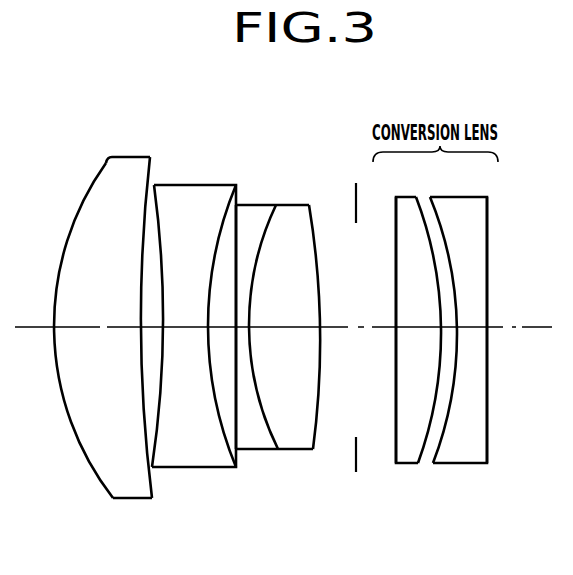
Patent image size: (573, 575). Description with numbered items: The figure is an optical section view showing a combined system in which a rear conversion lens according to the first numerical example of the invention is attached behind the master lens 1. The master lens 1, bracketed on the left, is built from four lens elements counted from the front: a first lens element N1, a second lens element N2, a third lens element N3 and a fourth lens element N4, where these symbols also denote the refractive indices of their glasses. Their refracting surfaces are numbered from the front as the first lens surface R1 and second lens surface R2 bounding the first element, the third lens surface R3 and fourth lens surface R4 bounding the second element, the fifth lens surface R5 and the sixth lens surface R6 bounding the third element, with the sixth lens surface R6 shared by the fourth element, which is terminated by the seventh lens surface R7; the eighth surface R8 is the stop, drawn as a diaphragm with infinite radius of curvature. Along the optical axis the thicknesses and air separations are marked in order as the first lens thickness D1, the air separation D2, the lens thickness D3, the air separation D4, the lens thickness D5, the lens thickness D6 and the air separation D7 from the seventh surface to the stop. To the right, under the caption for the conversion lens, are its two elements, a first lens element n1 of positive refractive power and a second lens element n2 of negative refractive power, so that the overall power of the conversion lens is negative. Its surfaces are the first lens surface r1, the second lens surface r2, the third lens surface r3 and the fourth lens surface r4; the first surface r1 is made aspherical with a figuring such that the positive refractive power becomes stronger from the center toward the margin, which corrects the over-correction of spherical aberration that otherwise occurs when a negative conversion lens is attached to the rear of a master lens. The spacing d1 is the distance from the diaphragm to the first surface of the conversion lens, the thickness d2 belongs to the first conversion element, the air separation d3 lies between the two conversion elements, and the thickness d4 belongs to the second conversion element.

The master lens 1 is at (326, 143).
The first lens element of the master lens N1 is at (103, 357).
The second lens element of the master lens N2 is at (194, 371).
The third lens element of the master lens N3 is at (274, 381).
The fourth lens element of the master lens N4 is at (299, 381).
The first lens surface R1 is at (105, 490).
The second lens surface R2 is at (148, 462).
The third lens surface R3 is at (157, 447).
The fourth lens surface R4 is at (235, 433).
The fifth lens surface R5 is at (247, 440).
The sixth lens surface R6 is at (273, 433).
The seventh lens surface R7 is at (313, 437).
The stop R8 is at (355, 438).
The first lens thickness D1 is at (100, 328).
The second air separation D2 is at (147, 328).
The third lens thickness D3 is at (187, 328).
The fourth air separation D4 is at (223, 328).
The fifth lens thickness D5 is at (243, 328).
The sixth lens thickness D6 is at (287, 328).
The seventh air separation D7 is at (335, 328).
The first lens element of the conversion lens n1 is at (420, 377).
The second lens element of the conversion lens n2 is at (468, 377).
The first lens surface of the conversion lens r1 is at (395, 450).
The second lens surface of the conversion lens r2 is at (425, 448).
The third lens surface of the conversion lens r3 is at (440, 445).
The fourth lens surface of the conversion lens r4 is at (492, 445).
The distance from the diaphragm to the first lens surface of the conversion lens d1 is at (383, 328).
The second lens thickness of the conversion lens d2 is at (423, 328).
The third air separation of the conversion lens d3 is at (448, 328).
The fourth lens thickness of the conversion lens d4 is at (475, 328).